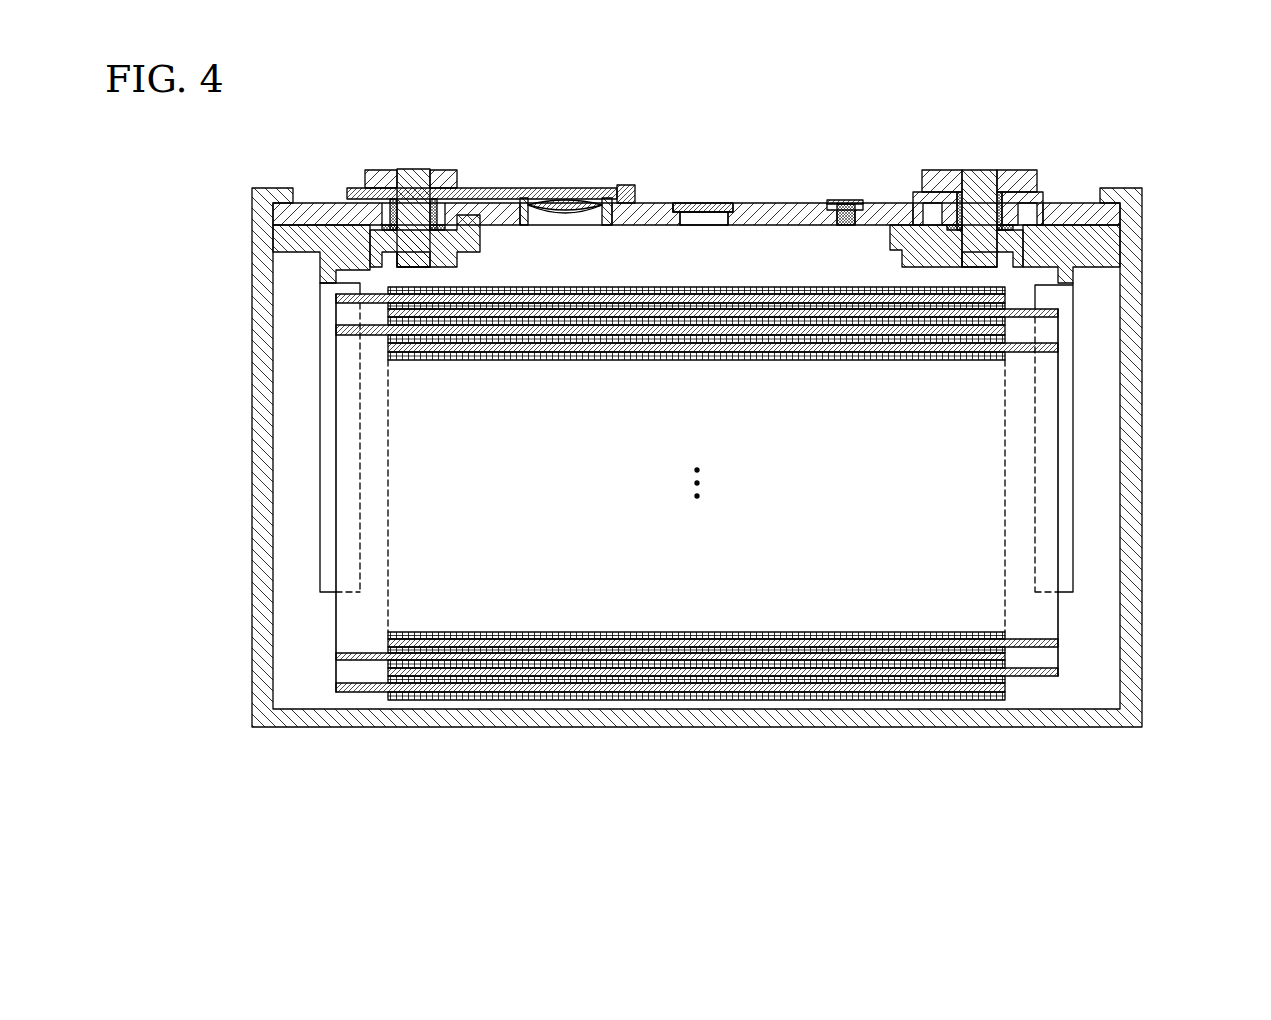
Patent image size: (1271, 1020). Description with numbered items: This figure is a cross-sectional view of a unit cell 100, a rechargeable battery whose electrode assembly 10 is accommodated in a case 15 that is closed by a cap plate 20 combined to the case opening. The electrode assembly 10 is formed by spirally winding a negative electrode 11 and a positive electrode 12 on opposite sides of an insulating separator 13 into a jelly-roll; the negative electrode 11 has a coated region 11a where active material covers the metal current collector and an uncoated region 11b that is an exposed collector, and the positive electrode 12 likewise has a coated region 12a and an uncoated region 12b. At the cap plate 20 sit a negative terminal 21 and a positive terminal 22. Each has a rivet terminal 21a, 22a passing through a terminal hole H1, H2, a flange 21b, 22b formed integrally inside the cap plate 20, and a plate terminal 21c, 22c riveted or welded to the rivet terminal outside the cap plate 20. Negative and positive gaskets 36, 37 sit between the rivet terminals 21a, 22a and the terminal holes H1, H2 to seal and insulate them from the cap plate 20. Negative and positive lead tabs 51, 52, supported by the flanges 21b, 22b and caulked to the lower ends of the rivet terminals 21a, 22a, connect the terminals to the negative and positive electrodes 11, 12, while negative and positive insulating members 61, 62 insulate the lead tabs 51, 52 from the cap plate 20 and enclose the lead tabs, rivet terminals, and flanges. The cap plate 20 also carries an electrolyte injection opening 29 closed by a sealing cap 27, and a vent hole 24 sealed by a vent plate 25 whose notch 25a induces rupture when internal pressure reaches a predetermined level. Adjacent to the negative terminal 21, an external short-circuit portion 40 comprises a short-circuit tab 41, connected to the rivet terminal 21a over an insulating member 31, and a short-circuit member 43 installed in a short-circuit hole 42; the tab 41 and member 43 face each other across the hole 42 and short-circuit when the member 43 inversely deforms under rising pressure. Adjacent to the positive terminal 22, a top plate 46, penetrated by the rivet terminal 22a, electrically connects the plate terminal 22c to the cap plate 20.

The unit cell 100 is at (730, 110).
The case 15 is at (1143, 391).
The cap plate 20 is at (772, 212).
The negative insulating member 61 is at (290, 240).
The positive insulating member 62 is at (1100, 244).
The first electrode terminal (negative terminal) 21 is at (414, 158).
The rivet terminal 21a is at (415, 260).
The flange 21b is at (447, 232).
The plate terminal 21c is at (440, 178).
The second electrode terminal (positive terminal) 22 is at (978, 158).
The rivet terminal 22a is at (978, 260).
The flange 22b is at (930, 240).
The plate terminal 22c is at (1027, 186).
The negative electrode gasket 36 is at (380, 212).
The positive electrode gasket 37 is at (932, 200).
The terminal hole H1 is at (392, 218).
The terminal hole H2 is at (1000, 215).
The external short-circuit portion 40 is at (567, 188).
The short-circuit tab 41 is at (522, 189).
The short-circuit hole 42 is at (592, 212).
The short-circuit member 43 is at (546, 216).
The insulating member 31 is at (623, 186).
The vent plate 25 is at (726, 204).
The notch 25a is at (684, 204).
The vent hole 24 is at (705, 221).
The sealing cap 27 is at (853, 203).
The electrolyte injection opening 29 is at (845, 208).
The top plate 46 is at (1040, 205).
The negative electrode lead tab 51 is at (309, 405).
The positive electrode lead tab 52 is at (1085, 553).
The electrode assembly 10 is at (820, 714).
The separator 13 is at (713, 700).
The first electrode (negative electrode) 11 is at (348, 779).
The coated region 11a is at (490, 662).
The uncoated region 11b is at (360, 694).
The second electrode (positive electrode) 12 is at (1070, 779).
The coated region 12a is at (930, 650).
The uncoated region 12b is at (1045, 678).